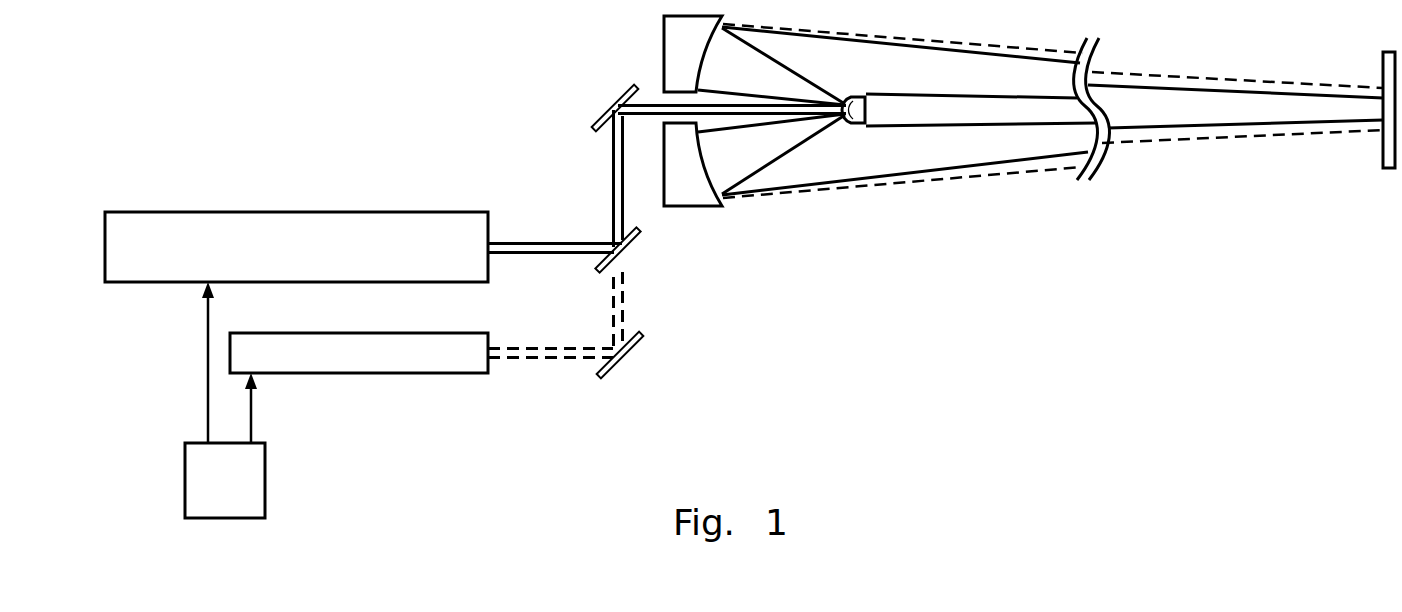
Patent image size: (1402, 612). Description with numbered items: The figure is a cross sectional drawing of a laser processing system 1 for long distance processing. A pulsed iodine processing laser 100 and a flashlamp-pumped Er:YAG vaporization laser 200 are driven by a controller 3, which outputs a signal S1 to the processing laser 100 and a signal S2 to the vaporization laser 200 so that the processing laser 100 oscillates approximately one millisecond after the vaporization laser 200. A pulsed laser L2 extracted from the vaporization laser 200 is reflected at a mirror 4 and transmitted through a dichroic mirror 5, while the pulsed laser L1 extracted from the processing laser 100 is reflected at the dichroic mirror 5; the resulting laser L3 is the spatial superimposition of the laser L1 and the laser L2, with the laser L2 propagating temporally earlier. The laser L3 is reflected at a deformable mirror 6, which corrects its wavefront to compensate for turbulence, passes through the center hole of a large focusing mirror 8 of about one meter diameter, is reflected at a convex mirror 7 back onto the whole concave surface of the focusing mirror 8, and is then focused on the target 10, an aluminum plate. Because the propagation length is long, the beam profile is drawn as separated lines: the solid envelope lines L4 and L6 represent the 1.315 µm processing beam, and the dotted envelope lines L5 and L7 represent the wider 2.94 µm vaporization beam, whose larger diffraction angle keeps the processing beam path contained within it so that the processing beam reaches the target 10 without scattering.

The laser processing system 1 is at (135, 43).
The processing laser 100 is at (293, 212).
The vaporization laser 200 is at (374, 374).
The controller 3 is at (185, 476).
The signal S1 is at (208, 401).
The signal S2 is at (251, 420).
The pulsed laser L1 is at (542, 242).
The pulsed laser L2 is at (545, 358).
The laser L3 is at (617, 168).
The mirror 4 is at (630, 347).
The dichroic mirror 5 is at (628, 247).
The deformable mirror 6 is at (612, 98).
The convex mirror 7 is at (860, 125).
The focusing mirror 8 is at (697, 207).
The 1.315 µm laser L4 is at (957, 133).
The 2.94 µm laser L5 is at (1030, 170).
The 1.315 µm laser L6 is at (1213, 110).
The 2.94 µm laser L7 is at (1272, 127).
The target 10 is at (1383, 157).